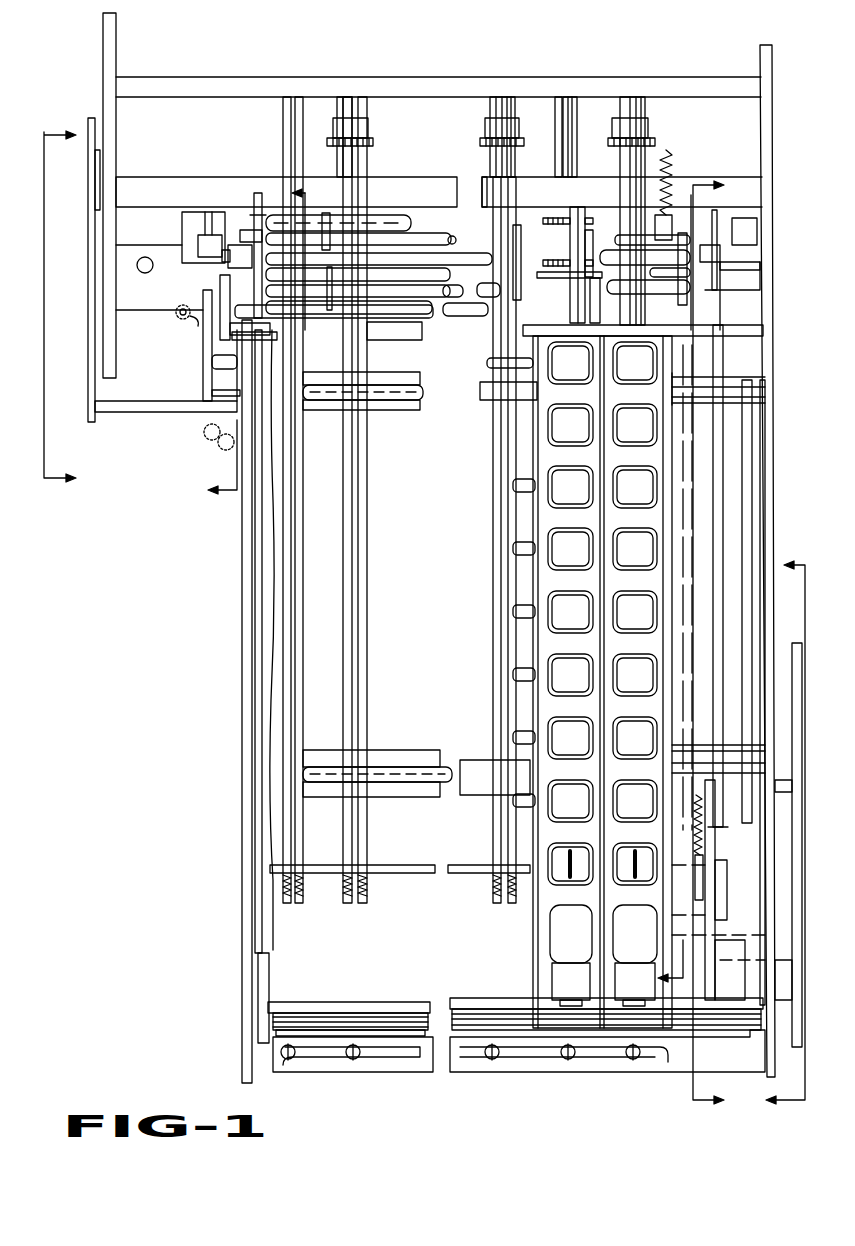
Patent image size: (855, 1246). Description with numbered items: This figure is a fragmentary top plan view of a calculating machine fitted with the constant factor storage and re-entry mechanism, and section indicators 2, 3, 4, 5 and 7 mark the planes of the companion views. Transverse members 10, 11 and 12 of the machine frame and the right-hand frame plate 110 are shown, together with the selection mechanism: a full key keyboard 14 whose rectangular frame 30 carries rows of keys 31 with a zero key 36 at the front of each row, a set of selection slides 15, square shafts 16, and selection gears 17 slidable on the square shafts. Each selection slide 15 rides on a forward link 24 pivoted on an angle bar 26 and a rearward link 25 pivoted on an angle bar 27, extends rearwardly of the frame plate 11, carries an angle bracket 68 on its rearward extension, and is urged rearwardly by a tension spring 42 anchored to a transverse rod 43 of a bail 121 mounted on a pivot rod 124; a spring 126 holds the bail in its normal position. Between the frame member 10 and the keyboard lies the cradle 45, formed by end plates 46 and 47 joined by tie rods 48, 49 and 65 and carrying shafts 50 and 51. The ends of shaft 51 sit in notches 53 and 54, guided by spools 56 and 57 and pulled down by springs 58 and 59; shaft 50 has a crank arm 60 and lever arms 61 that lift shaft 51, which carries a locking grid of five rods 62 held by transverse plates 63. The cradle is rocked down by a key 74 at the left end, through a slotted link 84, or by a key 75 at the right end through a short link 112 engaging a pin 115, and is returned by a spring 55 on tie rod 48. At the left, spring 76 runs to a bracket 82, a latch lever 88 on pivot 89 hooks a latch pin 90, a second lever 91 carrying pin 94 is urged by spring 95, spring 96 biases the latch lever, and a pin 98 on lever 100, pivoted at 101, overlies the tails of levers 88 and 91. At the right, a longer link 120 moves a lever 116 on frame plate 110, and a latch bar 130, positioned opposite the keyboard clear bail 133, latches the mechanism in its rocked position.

The section line 2- 2 is at (56, 306).
The section line 3- 3 is at (263, 345).
The section line 4- 4 is at (708, 642).
The section line 5- 5 is at (790, 830).
The section line 7- 7 is at (674, 587).
The transverse frame member 10 is at (187, 180).
The transverse frame plate 11 is at (398, 334).
The transverse frame member 12 is at (462, 85).
The full key keyboard 14 is at (532, 705).
The selection slides 15 is at (490, 514).
The square shafts 16 is at (488, 152).
The selection gears 17 is at (480, 142).
The supporting link 24 is at (396, 766).
The supporting link 25 is at (378, 404).
The angle bar 26 is at (428, 752).
The angle bar 27 is at (426, 404).
The rectangular frame 30 is at (545, 580).
The keys 31 is at (548, 656).
The zero key 36 is at (552, 978).
The tension springs 42 is at (490, 880).
The transverse rod 43 is at (410, 866).
The cradle 45 is at (257, 190).
The end plate 46 is at (250, 214).
The end plate 47 is at (712, 215).
The tie rod 48 is at (440, 220).
The tie rod 49 is at (442, 318).
The shaft 50 is at (386, 220).
The shaft 51 is at (470, 251).
The notch 53 is at (267, 247).
The notch 54 is at (656, 222).
The tension spring 55 is at (664, 164).
The guide spool 56 is at (238, 272).
The guide spool 57 is at (740, 218).
The tension spring 58 is at (222, 258).
The tension spring 59 is at (722, 262).
The crank arm 60 is at (200, 292).
The lever arms 61 is at (346, 206).
The elongated rods 62 is at (334, 334).
The transverse plates 63 is at (284, 235).
The tie rod 65 is at (466, 216).
The angle bracket 68 is at (522, 248).
The key 74 is at (198, 252).
The key 75 is at (755, 242).
The spring 76 is at (194, 322).
The bracket 82 is at (122, 232).
The link 84 is at (225, 212).
The latch lever 88 is at (205, 356).
The fixed pivot 89 is at (220, 366).
The latch pin 90 is at (177, 314).
The second lever 91 is at (225, 393).
The pin 94 is at (236, 318).
The spring 95 is at (222, 448).
The spring 96 is at (204, 432).
The pin 98 is at (146, 404).
The lever 100 is at (92, 394).
The fixed pivot 101 is at (86, 276).
The right-hand frame plate 110 is at (774, 440).
The short link 112 is at (720, 208).
The pin 115 is at (760, 292).
The lever 116 is at (716, 888).
The link 120 is at (718, 578).
The bail 121 is at (698, 870).
The pivot rod 124 is at (522, 858).
The spring 126 is at (692, 820).
The latch bar 130 is at (710, 976).
The keyboard clear bail 133 is at (502, 1003).